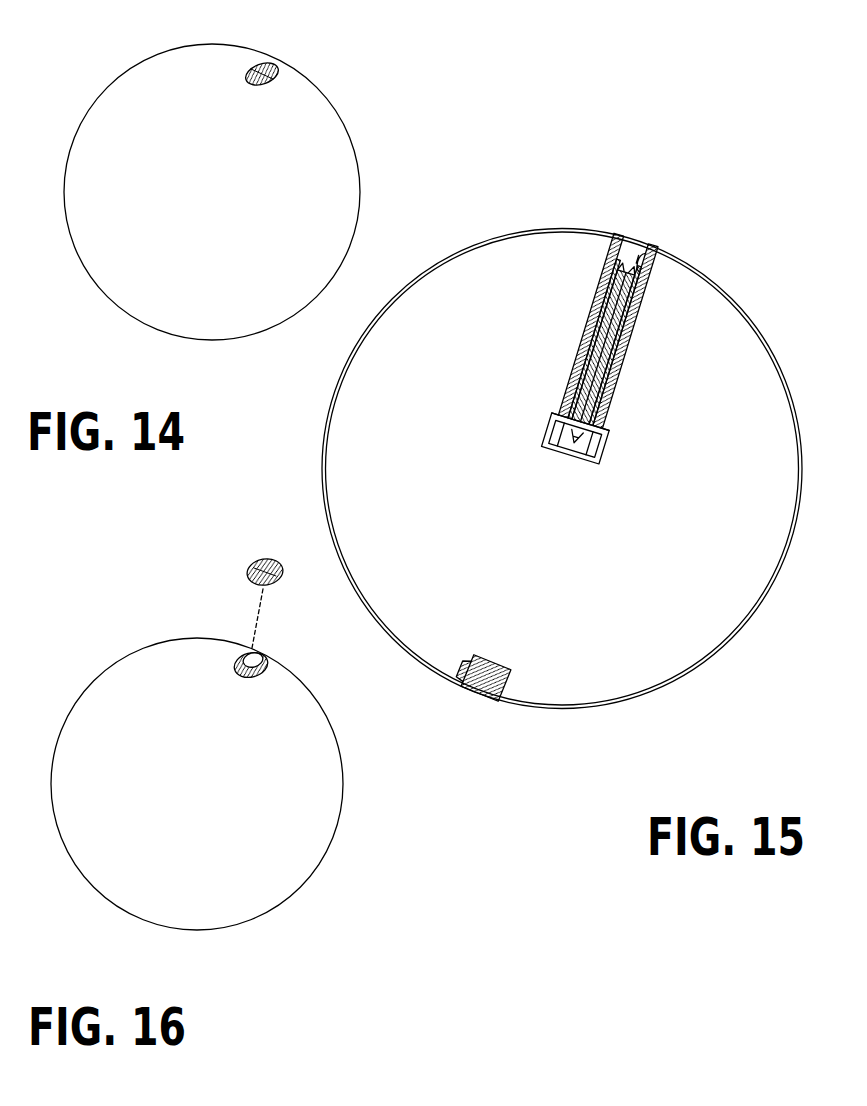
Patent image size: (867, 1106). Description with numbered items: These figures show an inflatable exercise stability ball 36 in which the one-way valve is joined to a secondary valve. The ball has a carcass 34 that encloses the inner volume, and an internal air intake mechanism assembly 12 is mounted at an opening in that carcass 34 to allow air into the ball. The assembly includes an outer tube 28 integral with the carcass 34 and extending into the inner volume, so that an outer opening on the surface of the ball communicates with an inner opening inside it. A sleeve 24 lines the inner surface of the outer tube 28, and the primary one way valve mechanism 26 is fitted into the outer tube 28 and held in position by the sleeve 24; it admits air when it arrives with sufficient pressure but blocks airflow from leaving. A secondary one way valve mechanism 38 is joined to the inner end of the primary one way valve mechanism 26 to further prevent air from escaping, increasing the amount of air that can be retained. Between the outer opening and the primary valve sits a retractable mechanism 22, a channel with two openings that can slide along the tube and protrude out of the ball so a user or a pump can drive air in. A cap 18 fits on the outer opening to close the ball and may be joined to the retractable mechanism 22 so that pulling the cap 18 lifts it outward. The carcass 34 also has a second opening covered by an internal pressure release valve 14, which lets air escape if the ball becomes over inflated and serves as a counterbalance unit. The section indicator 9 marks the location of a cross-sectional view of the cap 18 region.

In FIG. 14, the section line 9 is at (273, 54).
In FIG. 15, the internal mechanism assembly 12 is at (616, 375).
In FIG. 15, the internal pressure release valve 14 is at (493, 652).
In FIG. 14, the cap 18 is at (280, 83).
In FIG. 15, the cap 18 is at (616, 340).
In FIG. 16, the cap 18 is at (248, 575).
In FIG. 15, the retractable mechanism 22 is at (656, 251).
In FIG. 16, the retractable mechanism 22 is at (268, 654).
In FIG. 15, the sleeve 24 is at (599, 296).
In FIG. 15, the primary one way valve mechanism 26 is at (625, 348).
In FIG. 15, the outer tube 28 is at (580, 360).
In FIG. 15, the double end bag and stability ball carcass 34 is at (484, 235).
In FIG. 15, the stability ball 36 is at (562, 416).
In FIG. 16, the stability ball 36 is at (108, 610).
In FIG. 15, the secondary one way valve mechanism 38 is at (593, 450).